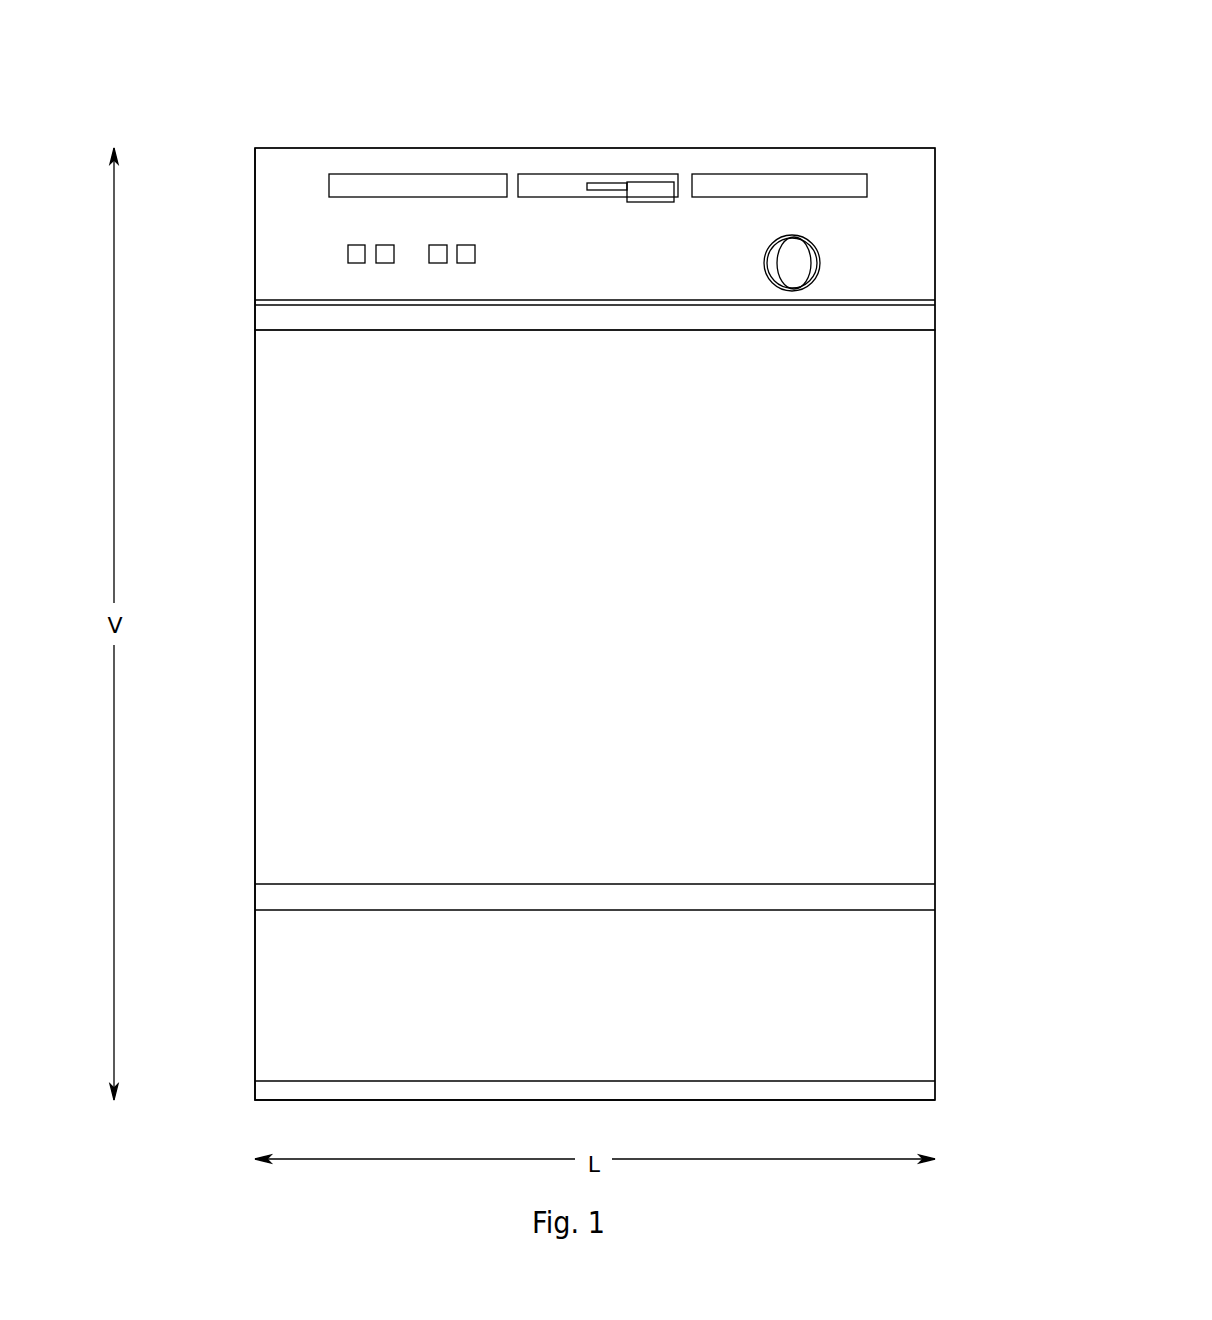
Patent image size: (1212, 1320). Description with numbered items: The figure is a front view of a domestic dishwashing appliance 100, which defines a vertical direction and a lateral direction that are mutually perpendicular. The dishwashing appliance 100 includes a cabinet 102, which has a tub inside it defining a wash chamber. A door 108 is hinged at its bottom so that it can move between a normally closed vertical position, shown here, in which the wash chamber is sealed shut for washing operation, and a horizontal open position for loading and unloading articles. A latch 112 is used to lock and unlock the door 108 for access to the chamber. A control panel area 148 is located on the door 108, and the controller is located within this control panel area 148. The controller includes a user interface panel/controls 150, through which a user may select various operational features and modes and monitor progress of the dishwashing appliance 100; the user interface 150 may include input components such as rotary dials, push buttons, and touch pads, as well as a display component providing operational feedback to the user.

The dishwashing appliance 100 is at (848, 112).
The cabinet 102 is at (255, 583).
The door 108 is at (878, 585).
The latch 112 is at (660, 190).
The control panel area 148 is at (910, 202).
The user interface panel/controls 150 is at (438, 246).